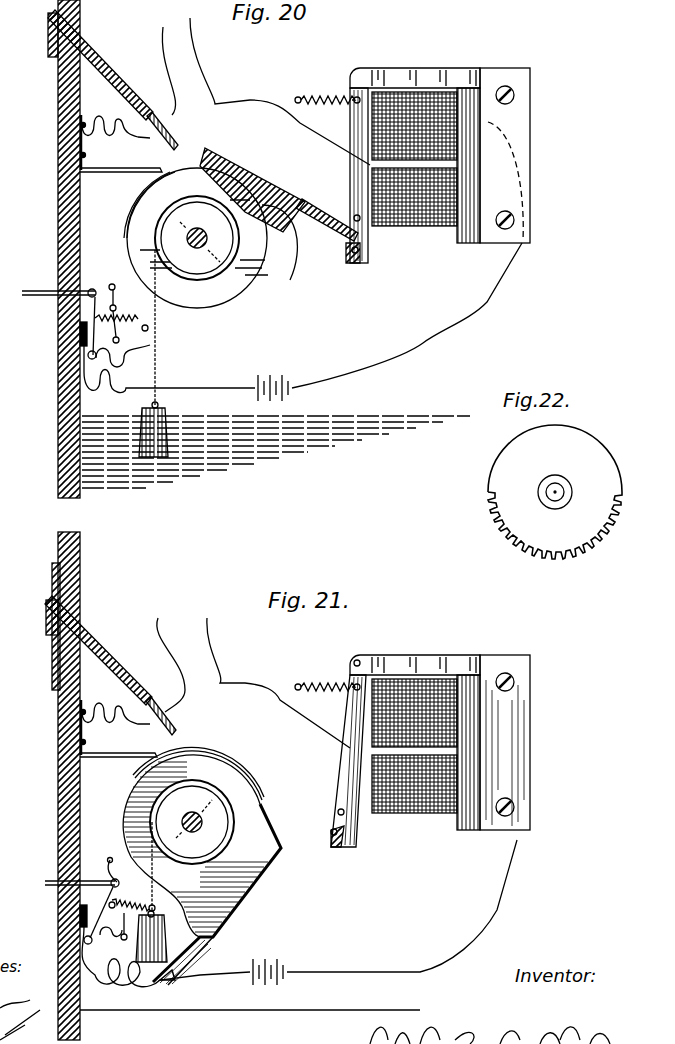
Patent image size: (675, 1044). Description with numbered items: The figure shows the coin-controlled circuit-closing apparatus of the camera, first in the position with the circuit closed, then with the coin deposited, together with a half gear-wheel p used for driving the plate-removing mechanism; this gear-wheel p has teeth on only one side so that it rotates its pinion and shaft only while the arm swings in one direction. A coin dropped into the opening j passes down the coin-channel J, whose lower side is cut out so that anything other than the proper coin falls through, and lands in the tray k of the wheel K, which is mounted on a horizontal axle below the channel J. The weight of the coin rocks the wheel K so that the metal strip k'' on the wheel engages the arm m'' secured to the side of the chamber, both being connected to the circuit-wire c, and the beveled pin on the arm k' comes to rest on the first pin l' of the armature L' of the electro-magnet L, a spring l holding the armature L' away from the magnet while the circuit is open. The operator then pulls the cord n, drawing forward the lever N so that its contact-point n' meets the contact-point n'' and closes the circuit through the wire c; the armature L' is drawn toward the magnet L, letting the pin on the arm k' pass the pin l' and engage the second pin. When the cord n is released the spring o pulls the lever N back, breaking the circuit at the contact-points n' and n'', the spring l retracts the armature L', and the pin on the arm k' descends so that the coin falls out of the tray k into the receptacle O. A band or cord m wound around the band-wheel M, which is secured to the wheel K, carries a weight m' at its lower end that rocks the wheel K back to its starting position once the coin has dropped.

In FIG. 20, the opening j is at (48, 32).
In FIG. 21, the opening j is at (45, 622).
In FIG. 20, the coin-channel J is at (113, 80).
In FIG. 21, the coin-channel J is at (110, 665).
In FIG. 20, the arm m'' is at (121, 160).
In FIG. 21, the arm m'' is at (118, 745).
In FIG. 20, the wheel K is at (230, 266).
In FIG. 21, the wheel K is at (225, 800).
In FIG. 20, the metal strip k'' is at (136, 205).
In FIG. 21, the metal strip k'' is at (201, 768).
In FIG. 20, the band-wheel M is at (200, 278).
In FIG. 21, the band-wheel M is at (192, 822).
In FIG. 20, the tray k is at (252, 188).
In FIG. 21, the tray k is at (217, 894).
In FIG. 20, the arm k' is at (327, 237).
In FIG. 20, the circuit-wire c is at (303, 212).
In FIG. 21, the circuit-wire c is at (218, 660).
In FIG. 20, the electro-magnet L is at (449, 155).
In FIG. 21, the electro-magnet L is at (452, 741).
In FIG. 20, the armature L' is at (373, 185).
In FIG. 21, the armature L' is at (354, 773).
In FIG. 20, the pin l' is at (373, 233).
In FIG. 21, the pin l' is at (362, 827).
In FIG. 20, the pivot pin i'' is at (345, 269).
In FIG. 21, the pivot pin i'' is at (326, 849).
In FIG. 20, the spring l is at (327, 84).
In FIG. 21, the spring l is at (327, 672).
In FIG. 20, the weight m' is at (190, 427).
In FIG. 21, the weight m' is at (180, 921).
In FIG. 20, the band or cord m is at (170, 329).
In FIG. 21, the band or cord m is at (166, 867).
In FIG. 20, the receptacle O is at (362, 448).
In FIG. 21, the receptacle O is at (250, 1023).
In FIG. 20, the cord n is at (59, 302).
In FIG. 21, the cord n is at (74, 894).
In FIG. 21, the contact-point n' is at (72, 915).
In FIG. 20, the contact-point n'' is at (61, 328).
In FIG. 21, the contact-point n'' is at (42, 910).
In FIG. 20, the spring b is at (122, 336).
In FIG. 21, the spring b is at (127, 917).
In FIG. 20, the spring o is at (106, 291).
In FIG. 21, the spring o is at (115, 898).
In FIG. 20, the lever N is at (80, 375).
In FIG. 21, the lever N is at (80, 925).
In FIG. 22, the half gear-wheel p is at (564, 480).